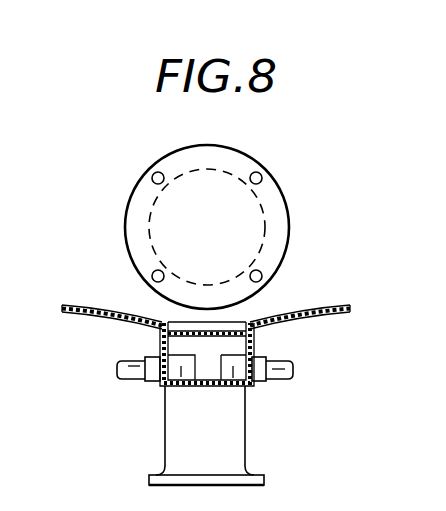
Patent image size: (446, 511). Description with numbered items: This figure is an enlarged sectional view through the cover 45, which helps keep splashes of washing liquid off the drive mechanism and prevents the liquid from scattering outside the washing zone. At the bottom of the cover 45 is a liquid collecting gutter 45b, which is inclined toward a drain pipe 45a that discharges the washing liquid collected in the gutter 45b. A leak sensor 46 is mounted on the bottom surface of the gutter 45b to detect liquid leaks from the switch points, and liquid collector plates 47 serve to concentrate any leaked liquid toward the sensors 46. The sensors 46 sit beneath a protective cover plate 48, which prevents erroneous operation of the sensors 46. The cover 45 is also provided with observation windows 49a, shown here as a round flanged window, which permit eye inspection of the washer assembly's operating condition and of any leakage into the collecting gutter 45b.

The observation window 49a is at (237, 213).
The cover 45 is at (88, 318).
The drain pipe 45a is at (235, 432).
The liquid collecting gutter 45b is at (225, 344).
The leak sensor 46 is at (158, 383).
The liquid collector plate 47 is at (227, 387).
The protective cover plate 48 is at (200, 337).